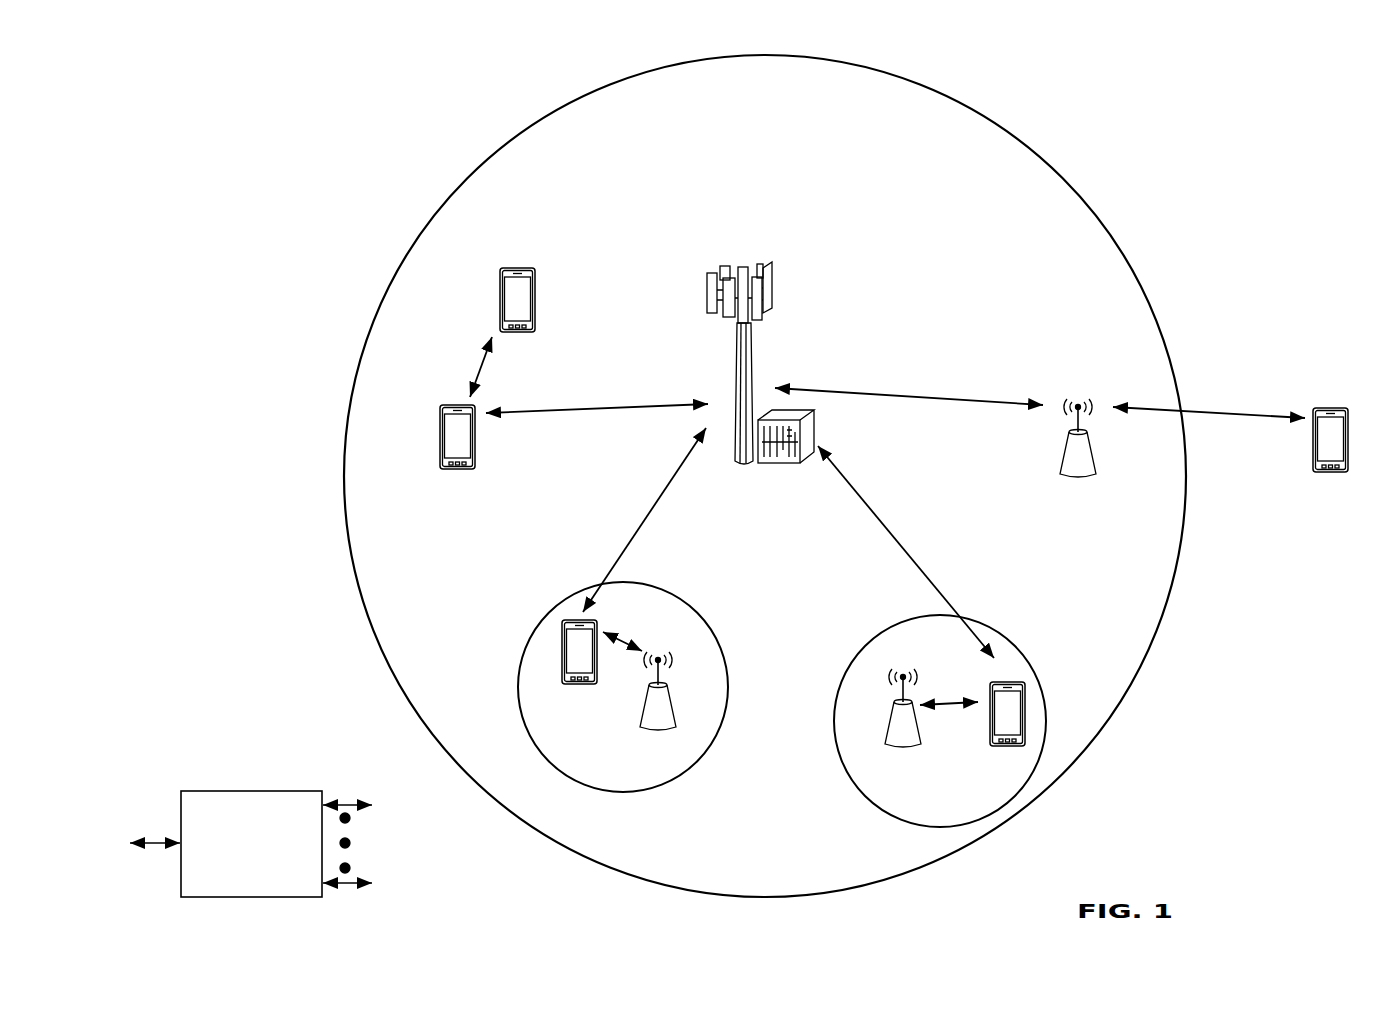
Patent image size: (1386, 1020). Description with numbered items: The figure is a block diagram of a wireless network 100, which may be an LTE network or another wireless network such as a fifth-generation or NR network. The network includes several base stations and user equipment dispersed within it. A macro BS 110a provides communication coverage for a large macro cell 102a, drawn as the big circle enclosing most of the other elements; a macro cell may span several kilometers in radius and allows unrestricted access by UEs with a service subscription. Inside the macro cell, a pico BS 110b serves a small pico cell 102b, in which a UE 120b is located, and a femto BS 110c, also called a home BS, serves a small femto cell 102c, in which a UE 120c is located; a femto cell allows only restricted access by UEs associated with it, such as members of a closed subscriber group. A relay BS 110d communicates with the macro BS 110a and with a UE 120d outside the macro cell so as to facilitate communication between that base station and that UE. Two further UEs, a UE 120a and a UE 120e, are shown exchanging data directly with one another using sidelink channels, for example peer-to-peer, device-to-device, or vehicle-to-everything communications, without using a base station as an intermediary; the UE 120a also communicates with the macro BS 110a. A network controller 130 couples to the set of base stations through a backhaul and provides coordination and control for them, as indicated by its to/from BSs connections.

The wireless network 100 is at (238, 52).
The macro cell 102a is at (1042, 162).
The pico cell 102b is at (711, 627).
The femto cell 102c is at (878, 635).
The macro BS 110a is at (751, 254).
The pico BS 110b is at (680, 717).
The femto BS 110c is at (888, 727).
The relay BS 110d is at (1079, 396).
The UE 120a is at (440, 435).
The UE 120b is at (568, 686).
The UE 120c is at (1000, 746).
The UE 120d is at (1343, 407).
The UE 120e is at (500, 290).
The network controller 130 is at (250, 790).